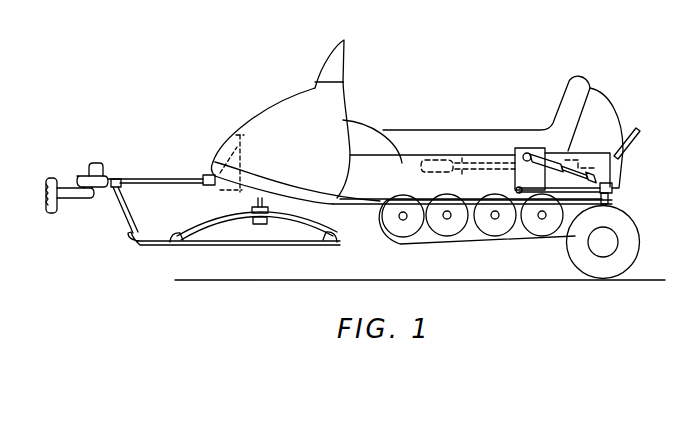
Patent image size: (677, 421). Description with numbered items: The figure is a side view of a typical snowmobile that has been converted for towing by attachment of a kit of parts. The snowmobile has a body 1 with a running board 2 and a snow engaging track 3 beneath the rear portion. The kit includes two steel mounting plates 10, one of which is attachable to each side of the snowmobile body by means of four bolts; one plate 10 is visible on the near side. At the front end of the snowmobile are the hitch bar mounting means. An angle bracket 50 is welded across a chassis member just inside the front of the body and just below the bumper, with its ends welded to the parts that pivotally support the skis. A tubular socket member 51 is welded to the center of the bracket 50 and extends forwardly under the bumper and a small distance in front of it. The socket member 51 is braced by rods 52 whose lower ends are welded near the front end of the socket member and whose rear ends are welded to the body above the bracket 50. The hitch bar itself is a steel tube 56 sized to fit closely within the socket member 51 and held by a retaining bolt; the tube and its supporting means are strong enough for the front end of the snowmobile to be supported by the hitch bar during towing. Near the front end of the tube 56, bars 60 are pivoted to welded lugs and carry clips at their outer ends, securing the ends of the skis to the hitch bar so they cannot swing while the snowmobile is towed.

The body 1 is at (393, 173).
The running board 2 is at (345, 198).
The snow engaging track 3 is at (477, 238).
The steel mounting plate 10 is at (520, 148).
The angle bracket 50 is at (230, 190).
The tubular socket member 51 is at (207, 175).
The rods 52 is at (226, 142).
The steel tube 56 is at (167, 178).
The bars 60 is at (115, 197).